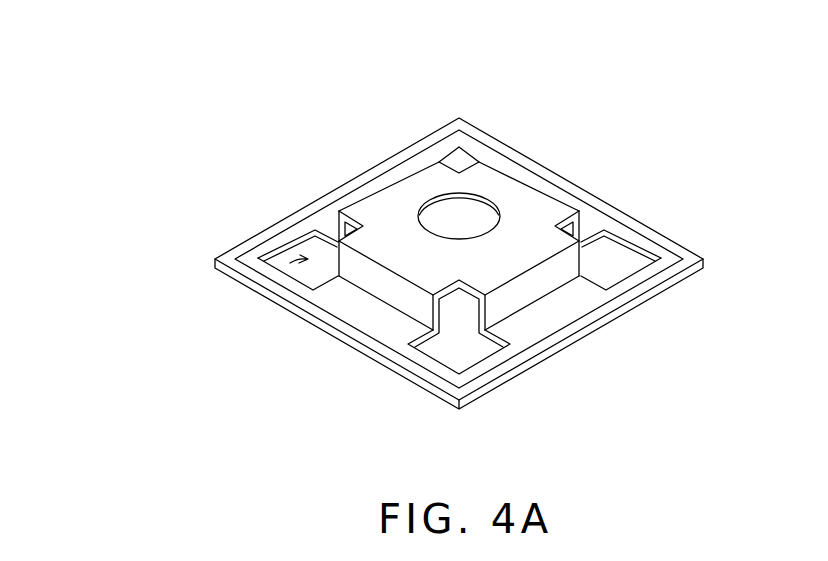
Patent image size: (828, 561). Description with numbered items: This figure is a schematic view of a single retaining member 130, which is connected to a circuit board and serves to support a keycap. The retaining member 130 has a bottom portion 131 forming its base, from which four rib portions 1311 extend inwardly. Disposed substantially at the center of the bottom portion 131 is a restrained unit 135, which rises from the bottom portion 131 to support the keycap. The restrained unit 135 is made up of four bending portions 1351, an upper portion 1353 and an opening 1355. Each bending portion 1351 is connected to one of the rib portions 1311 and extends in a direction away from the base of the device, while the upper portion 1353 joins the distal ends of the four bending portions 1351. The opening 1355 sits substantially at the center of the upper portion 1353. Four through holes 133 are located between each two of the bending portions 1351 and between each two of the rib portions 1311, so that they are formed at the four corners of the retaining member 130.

The retaining member 130 is at (157, 31).
The bottom portion 131 is at (242, 253).
The rib portion 1311 is at (398, 328).
The through hole 133 is at (290, 263).
The restrained unit 135 is at (364, 232).
The bending portion 1351 is at (385, 287).
The upper portion 1353 is at (390, 218).
The opening 1355 is at (443, 220).